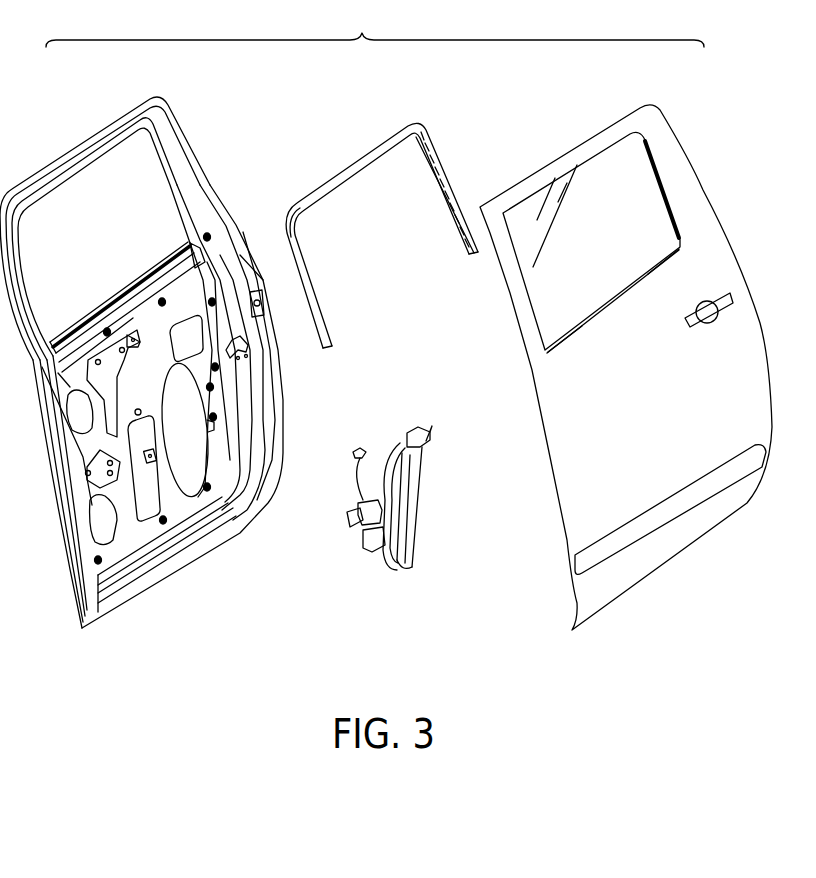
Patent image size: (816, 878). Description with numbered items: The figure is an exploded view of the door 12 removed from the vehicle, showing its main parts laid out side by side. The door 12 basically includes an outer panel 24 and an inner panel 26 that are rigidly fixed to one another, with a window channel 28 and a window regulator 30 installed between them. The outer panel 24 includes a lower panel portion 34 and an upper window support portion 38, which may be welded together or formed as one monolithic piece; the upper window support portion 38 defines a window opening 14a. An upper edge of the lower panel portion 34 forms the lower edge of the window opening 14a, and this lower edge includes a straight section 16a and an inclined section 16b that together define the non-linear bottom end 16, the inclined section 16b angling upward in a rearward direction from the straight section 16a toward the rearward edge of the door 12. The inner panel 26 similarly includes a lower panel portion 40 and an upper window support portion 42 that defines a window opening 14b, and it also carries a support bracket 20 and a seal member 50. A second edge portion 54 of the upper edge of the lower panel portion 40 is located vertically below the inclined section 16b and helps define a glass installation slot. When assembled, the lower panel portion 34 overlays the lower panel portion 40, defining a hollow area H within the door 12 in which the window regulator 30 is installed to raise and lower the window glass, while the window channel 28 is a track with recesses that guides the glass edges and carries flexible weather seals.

The door 12 is at (375, 24).
The window opening 14a is at (655, 178).
The window opening 14b is at (163, 187).
The non-linear bottom end 16 is at (650, 215).
The straight section 16a is at (587, 320).
The inclined section 16b is at (647, 277).
The support bracket 20 is at (180, 268).
The outer panel 24 is at (703, 250).
The inner panel 26 is at (253, 480).
The window channel 28 is at (452, 158).
The window regulator 30 is at (413, 520).
The lower panel portion 34 is at (585, 418).
The upper window support portion 38 is at (592, 140).
The lower panel portion 40 is at (270, 360).
The upper window support portion 42 is at (173, 155).
The seal member 50 is at (88, 320).
The second edge portion 54 is at (173, 287).
The hollow area H is at (182, 503).